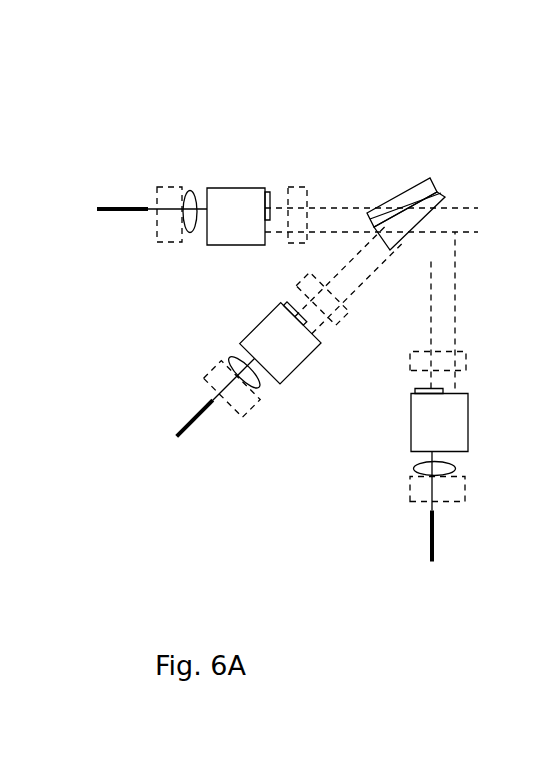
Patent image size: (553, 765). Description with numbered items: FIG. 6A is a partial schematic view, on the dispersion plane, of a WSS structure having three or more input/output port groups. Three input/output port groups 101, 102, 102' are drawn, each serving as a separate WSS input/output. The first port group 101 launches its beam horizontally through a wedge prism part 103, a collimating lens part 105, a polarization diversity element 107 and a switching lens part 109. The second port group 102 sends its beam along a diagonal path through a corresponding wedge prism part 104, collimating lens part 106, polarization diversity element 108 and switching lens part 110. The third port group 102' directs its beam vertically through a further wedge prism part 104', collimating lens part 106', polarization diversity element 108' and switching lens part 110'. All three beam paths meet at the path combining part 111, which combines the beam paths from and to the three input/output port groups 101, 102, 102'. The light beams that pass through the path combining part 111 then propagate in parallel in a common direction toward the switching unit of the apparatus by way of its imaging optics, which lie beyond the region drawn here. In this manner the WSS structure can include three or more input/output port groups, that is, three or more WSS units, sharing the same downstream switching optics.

The input/output port group 101 is at (108, 197).
The input/output port group 102 is at (179, 428).
The input/output port group 102' is at (484, 543).
The wedge prism part 103 is at (162, 176).
The wedge prism part 104 is at (195, 361).
The wedge prism part 104' is at (383, 489).
The collimating lens part 105 is at (188, 186).
The collimating lens part 106 is at (223, 343).
The collimating lens part 106' is at (378, 458).
The polarization diversity element 107 is at (238, 186).
The polarization diversity element 108 is at (272, 331).
The polarization diversity element 108' is at (393, 420).
The switching lens part 109 is at (295, 184).
The switching lens part 110 is at (306, 286).
The switching lens part 110' is at (422, 344).
The path combining part 111 is at (438, 186).